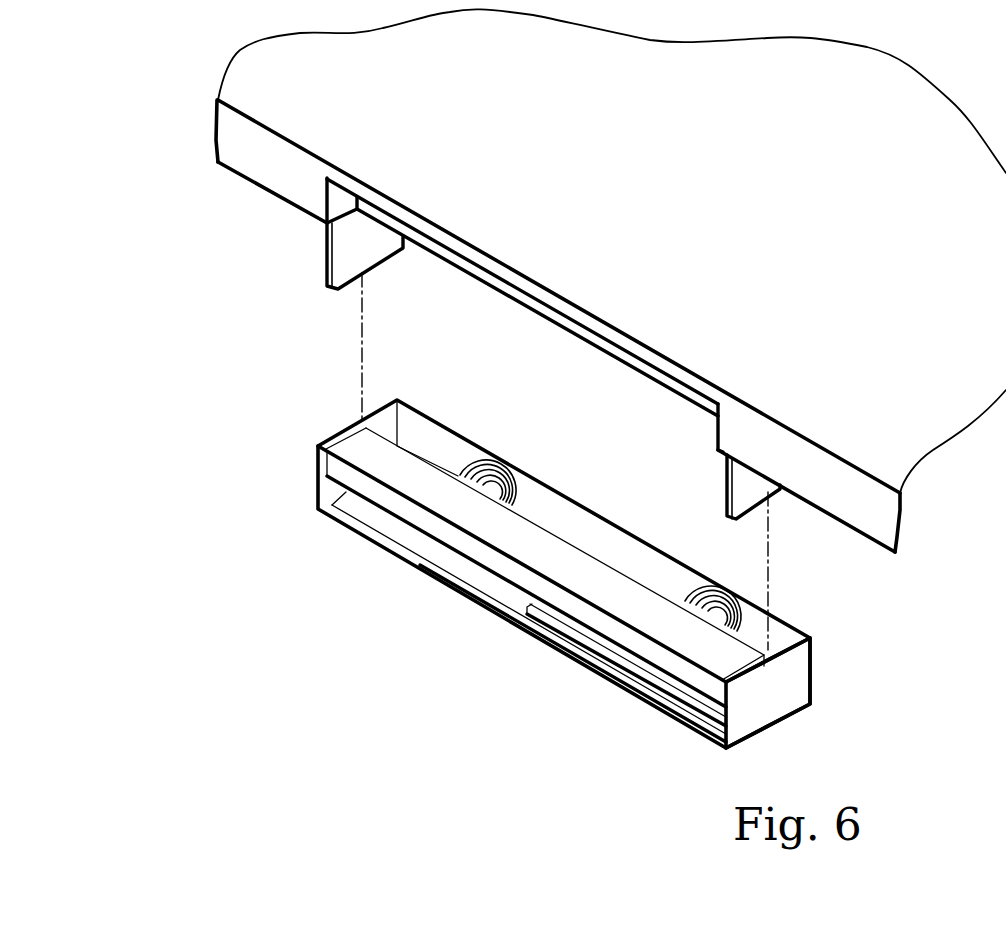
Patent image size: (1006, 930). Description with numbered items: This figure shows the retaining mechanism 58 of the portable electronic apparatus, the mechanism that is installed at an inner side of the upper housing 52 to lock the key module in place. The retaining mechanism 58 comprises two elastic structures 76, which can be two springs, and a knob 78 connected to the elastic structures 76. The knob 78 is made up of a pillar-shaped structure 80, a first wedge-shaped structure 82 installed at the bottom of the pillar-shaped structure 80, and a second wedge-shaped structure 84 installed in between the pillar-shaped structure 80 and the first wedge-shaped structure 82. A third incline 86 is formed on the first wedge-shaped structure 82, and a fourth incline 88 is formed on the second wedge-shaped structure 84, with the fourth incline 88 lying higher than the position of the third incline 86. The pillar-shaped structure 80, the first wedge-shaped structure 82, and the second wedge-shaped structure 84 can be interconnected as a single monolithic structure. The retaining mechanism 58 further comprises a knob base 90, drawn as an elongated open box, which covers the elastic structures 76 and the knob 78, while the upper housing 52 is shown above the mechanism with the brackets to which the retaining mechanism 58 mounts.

The upper housing 52 is at (290, 88).
The retaining mechanism 58 is at (548, 578).
The elastic structures 76 is at (483, 463).
The knob 78 is at (304, 483).
The pillar-shaped structure 80 is at (545, 548).
The first wedge-shaped structure 82 is at (352, 539).
The second wedge-shaped structure 84 is at (608, 676).
The third incline 86 is at (443, 557).
The fourth incline 88 is at (677, 695).
The knob base 90 is at (802, 680).